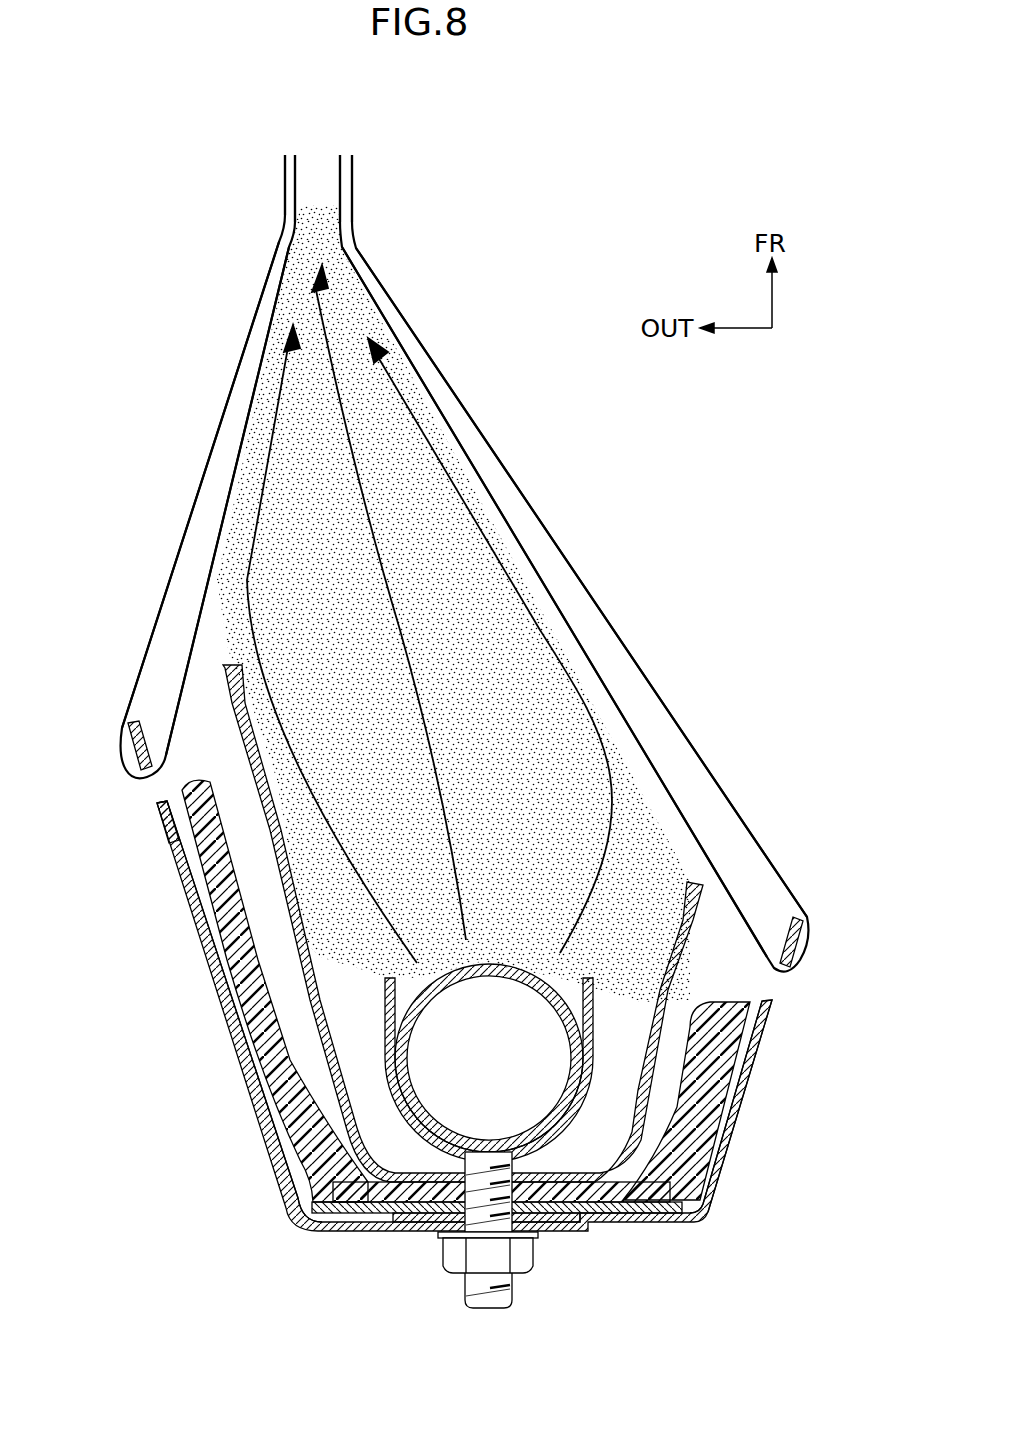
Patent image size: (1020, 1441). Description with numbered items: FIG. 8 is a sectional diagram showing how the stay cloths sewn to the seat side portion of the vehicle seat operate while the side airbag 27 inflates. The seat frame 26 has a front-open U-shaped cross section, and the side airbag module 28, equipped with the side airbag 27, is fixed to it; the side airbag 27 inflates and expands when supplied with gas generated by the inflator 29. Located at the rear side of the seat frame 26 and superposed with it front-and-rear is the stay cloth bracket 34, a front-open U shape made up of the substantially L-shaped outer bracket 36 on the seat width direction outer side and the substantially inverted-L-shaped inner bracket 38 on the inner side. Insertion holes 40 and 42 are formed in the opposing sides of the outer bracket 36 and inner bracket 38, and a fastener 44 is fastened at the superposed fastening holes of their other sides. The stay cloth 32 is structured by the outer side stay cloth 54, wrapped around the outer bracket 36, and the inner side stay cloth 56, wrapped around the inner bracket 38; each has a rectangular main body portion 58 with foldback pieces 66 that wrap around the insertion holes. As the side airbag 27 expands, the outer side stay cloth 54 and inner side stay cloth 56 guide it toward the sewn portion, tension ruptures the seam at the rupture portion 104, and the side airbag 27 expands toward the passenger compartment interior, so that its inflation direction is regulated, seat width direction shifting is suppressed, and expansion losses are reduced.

The rupture portion 104 is at (313, 159).
The main body portion 58 is at (233, 379).
The outer side stay cloth 54 is at (198, 493).
The inner side stay cloth 56 is at (519, 493).
The stay cloth 32 is at (451, 563).
The foldback piece 66 is at (186, 665).
The side airbag 27 is at (548, 766).
The insertion hole 40 is at (160, 803).
The side airbag module 28 is at (294, 916).
The seat frame 26 is at (240, 988).
The outer bracket 36 is at (268, 1146).
The inner bracket 38 is at (716, 1185).
The stay cloth bracket 34 is at (476, 1027).
The insertion hole 42 is at (774, 1001).
The inflator 29 is at (412, 1125).
The fastener 44 is at (455, 1262).